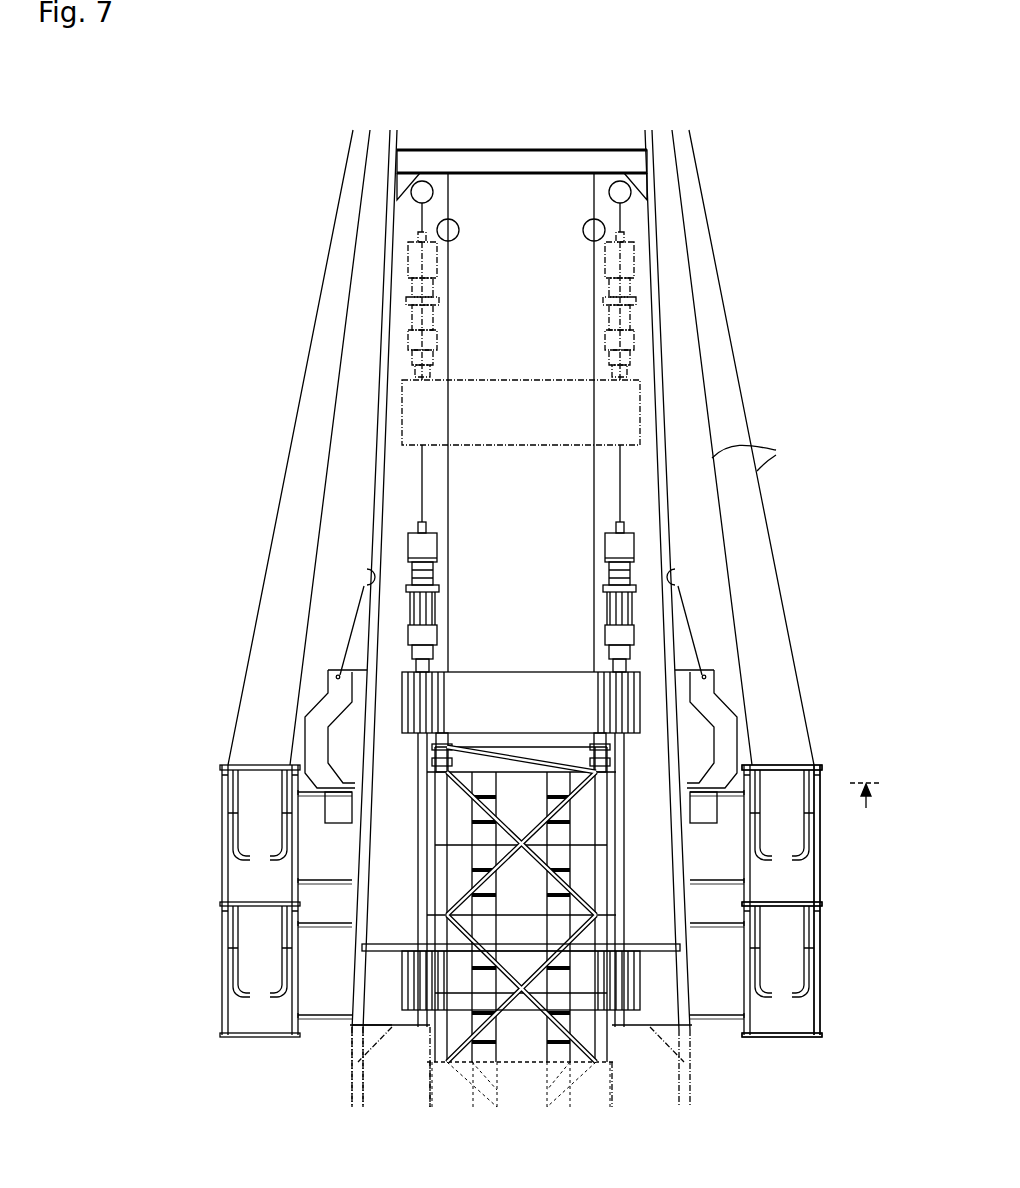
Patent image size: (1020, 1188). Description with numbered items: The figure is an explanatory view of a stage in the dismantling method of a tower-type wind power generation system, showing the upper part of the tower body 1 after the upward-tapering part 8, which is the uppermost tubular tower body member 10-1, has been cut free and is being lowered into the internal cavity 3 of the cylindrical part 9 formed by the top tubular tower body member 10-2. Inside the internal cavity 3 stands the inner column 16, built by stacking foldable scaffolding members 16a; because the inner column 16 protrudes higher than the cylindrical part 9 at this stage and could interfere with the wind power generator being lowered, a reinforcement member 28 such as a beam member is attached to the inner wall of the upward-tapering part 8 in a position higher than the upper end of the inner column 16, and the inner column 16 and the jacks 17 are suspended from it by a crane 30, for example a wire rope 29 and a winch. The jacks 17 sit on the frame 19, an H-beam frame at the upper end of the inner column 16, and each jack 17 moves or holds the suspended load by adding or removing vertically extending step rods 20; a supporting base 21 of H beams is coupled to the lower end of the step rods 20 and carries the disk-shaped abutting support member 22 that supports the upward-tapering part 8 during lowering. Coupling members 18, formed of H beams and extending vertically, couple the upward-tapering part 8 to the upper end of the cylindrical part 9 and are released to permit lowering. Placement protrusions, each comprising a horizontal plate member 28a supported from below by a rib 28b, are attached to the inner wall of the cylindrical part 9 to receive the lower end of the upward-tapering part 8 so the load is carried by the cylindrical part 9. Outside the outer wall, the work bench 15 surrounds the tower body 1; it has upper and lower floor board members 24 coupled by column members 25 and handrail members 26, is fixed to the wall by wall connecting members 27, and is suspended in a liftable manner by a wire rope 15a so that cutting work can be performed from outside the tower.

The tower body 1 is at (529, 550).
The internal cavity 3 is at (651, 1071).
The upward-tapering part 8 is at (688, 386).
The cylindrical part 9 is at (866, 813).
The uppermost tubular tower body member 10-1 is at (655, 262).
The top tubular tower body member 10-2 is at (695, 1100).
The work bench 15 is at (222, 1046).
The wire rope 15a is at (771, 451).
The inner column 16 is at (426, 1090).
The foldable scaffolding member 16a is at (612, 1098).
The jack 17 is at (437, 268).
The coupling member 18 is at (345, 780).
The frame 19 is at (630, 447).
The step rod 20 is at (418, 852).
The supporting base 21 is at (641, 1010).
The abutting support member 22 is at (650, 945).
The floor board member 24 is at (800, 905).
The column member 25 is at (824, 852).
The handrail member 26 is at (780, 766).
The wall connecting member 27 is at (720, 884).
The reinforcement member 28 is at (528, 150).
The horizontal plate member 28a is at (378, 1027).
The rib 28b is at (391, 1073).
The wire rope 29 is at (450, 465).
The crane 30 is at (433, 192).